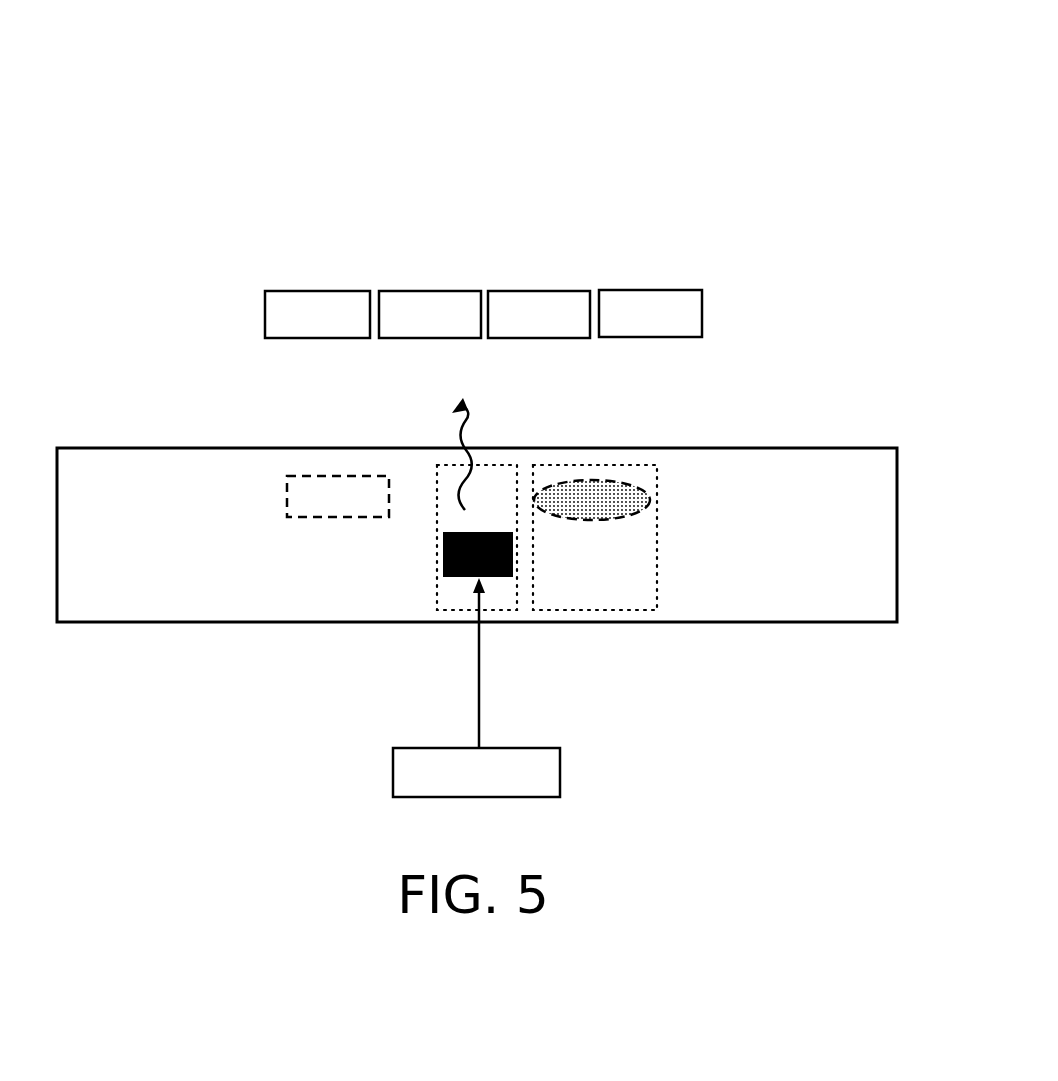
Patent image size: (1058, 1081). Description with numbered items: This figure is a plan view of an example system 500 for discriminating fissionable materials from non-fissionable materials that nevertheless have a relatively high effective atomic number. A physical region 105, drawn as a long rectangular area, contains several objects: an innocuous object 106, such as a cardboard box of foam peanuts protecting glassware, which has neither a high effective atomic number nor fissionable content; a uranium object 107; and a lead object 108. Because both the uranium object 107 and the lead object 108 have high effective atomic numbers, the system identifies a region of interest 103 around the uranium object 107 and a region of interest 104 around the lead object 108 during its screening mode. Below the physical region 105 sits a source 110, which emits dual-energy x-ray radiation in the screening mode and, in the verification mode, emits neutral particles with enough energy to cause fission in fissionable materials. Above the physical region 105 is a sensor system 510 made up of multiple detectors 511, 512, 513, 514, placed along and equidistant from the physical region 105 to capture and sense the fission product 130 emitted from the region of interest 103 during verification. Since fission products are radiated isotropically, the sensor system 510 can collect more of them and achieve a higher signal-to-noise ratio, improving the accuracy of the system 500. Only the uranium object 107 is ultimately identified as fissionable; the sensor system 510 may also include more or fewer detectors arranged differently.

The system 500 is at (485, 47).
The sensor system 510 is at (728, 252).
The detector 511 is at (317, 314).
The detector 512 is at (430, 314).
The detector 513 is at (539, 314).
The detector 514 is at (650, 313).
The physical region 105 is at (818, 426).
The object 106 is at (338, 496).
The region of interest 103 is at (503, 463).
The region of interest 104 is at (617, 463).
The uranium object 107 is at (480, 532).
The lead object 108 is at (592, 500).
The fission product 130 is at (441, 454).
The source 110 is at (476, 687).